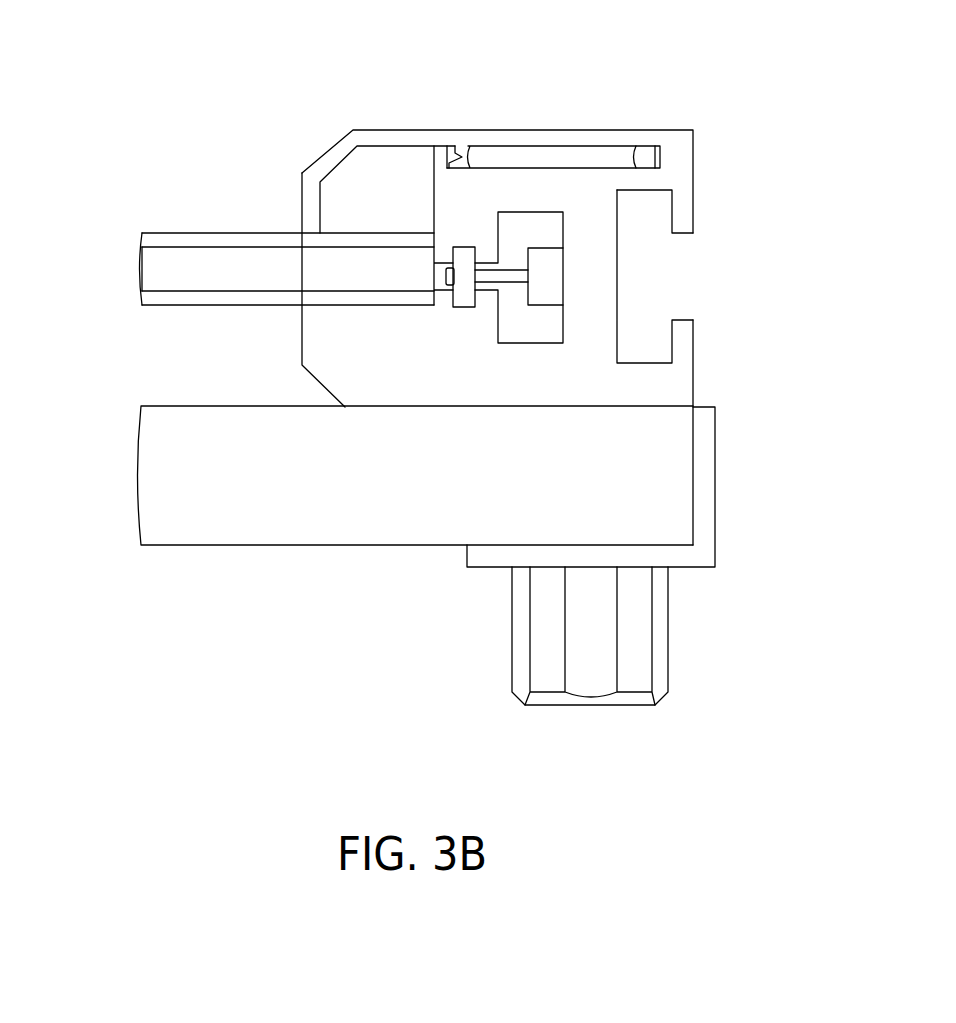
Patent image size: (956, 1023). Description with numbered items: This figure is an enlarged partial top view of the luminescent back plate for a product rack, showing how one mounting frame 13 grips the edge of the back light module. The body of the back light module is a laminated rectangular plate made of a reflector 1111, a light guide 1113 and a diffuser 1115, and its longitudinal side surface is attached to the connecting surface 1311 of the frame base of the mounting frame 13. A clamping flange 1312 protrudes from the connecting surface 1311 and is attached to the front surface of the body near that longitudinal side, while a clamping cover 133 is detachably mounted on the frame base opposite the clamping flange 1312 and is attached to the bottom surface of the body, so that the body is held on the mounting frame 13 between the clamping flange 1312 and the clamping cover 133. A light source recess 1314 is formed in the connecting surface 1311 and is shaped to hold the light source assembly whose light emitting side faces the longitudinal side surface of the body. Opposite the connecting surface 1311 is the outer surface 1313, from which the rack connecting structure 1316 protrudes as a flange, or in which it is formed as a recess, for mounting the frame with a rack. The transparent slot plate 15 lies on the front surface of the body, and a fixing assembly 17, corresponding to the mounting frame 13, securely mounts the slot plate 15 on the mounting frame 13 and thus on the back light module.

The mounting frame 13 is at (688, 91).
The clamping cover 133 is at (554, 121).
The connecting surface 1311 is at (434, 192).
The clamping flange 1312 is at (328, 363).
The outer surface 1313 is at (693, 213).
The light source recess 1314 is at (563, 322).
The rack connecting structure 1316 is at (617, 258).
The reflector 1111 is at (187, 240).
The light guide 1113 is at (157, 265).
The diffuser 1115 is at (170, 297).
The slot plate 15 is at (353, 530).
The fixing assembly 17 is at (730, 489).